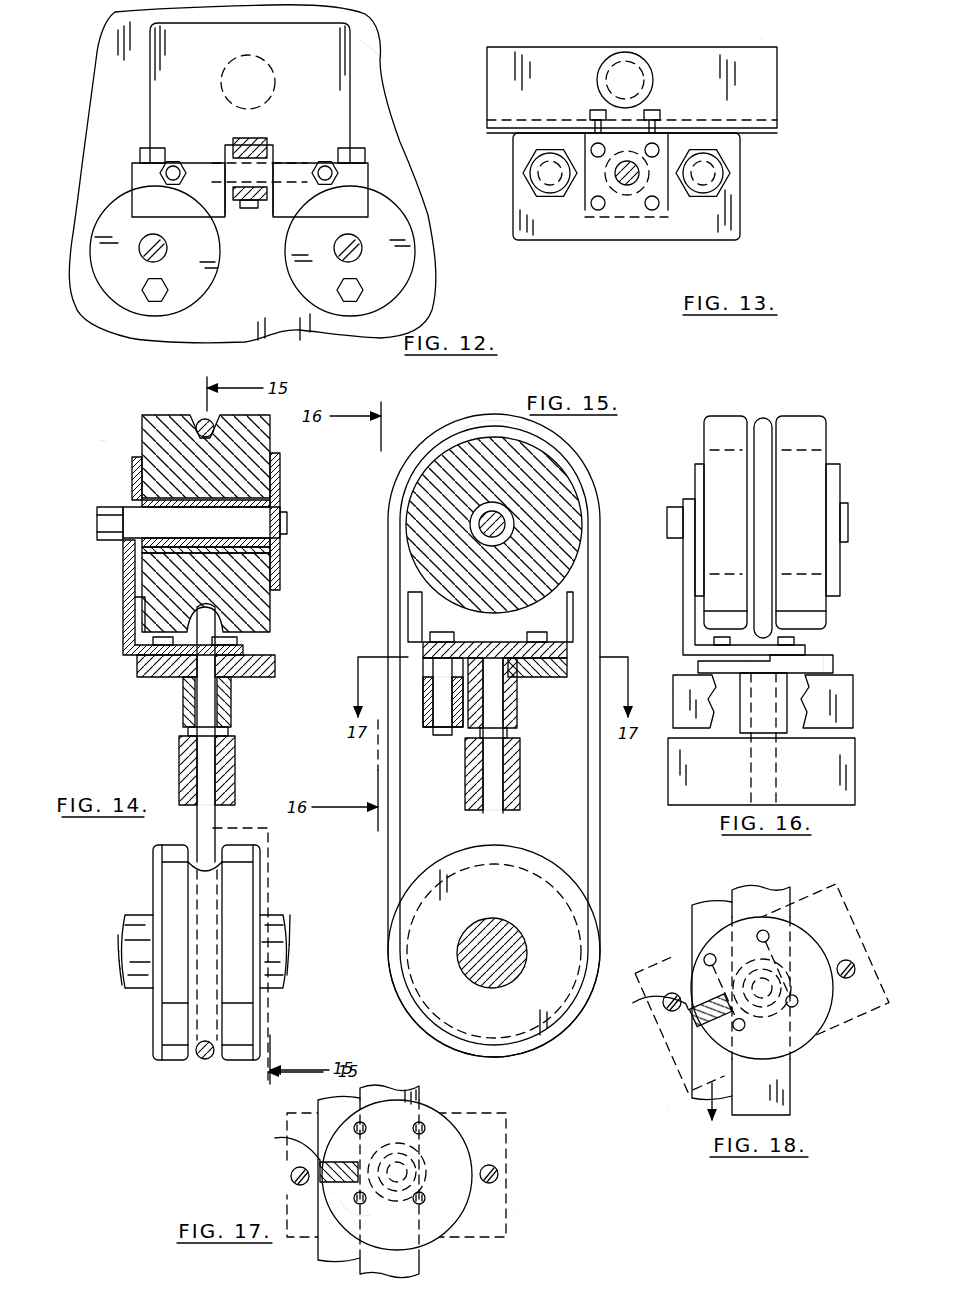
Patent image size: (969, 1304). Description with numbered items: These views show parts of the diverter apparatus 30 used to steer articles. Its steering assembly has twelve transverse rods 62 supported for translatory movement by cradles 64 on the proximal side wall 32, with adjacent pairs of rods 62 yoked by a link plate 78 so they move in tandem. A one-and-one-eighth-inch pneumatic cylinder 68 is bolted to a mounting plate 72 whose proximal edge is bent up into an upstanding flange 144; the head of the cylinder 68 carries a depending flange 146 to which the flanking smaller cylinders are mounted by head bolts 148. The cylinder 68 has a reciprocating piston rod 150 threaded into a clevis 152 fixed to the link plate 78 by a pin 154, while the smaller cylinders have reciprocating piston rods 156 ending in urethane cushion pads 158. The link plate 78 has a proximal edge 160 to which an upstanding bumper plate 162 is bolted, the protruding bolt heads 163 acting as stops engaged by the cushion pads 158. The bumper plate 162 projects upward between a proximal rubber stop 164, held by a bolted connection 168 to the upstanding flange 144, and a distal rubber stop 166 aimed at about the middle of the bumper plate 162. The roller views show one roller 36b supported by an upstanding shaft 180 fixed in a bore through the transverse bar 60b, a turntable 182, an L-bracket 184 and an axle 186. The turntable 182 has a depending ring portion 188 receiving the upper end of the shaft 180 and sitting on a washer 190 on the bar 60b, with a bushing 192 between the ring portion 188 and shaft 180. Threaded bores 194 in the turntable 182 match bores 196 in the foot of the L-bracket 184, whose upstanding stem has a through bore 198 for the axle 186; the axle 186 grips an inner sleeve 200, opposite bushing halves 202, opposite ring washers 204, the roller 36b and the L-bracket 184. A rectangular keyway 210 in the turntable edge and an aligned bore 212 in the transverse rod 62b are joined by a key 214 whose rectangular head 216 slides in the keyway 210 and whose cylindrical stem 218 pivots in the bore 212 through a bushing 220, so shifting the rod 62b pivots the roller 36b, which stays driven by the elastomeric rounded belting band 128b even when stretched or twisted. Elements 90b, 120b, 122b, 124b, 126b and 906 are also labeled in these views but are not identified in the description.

In FIG. 12, the diverter apparatus 30 is at (385, 50).
In FIG. 13, the diverter apparatus 30 is at (760, 38).
In FIG. 14, the diverter apparatus 30 is at (106, 442).
In FIG. 16, the diverter apparatus 30 is at (813, 392).
In FIG. 17, the diverter apparatus 30 is at (516, 1213).
In FIG. 18, the diverter apparatus 30 is at (668, 1108).
In FIG. 12, the proximal side wall 32 is at (108, 88).
In FIG. 14, the roller 36b is at (275, 452).
In FIG. 15, the roller 36b is at (585, 445).
In FIG. 16, the roller 36b is at (826, 412).
In FIG. 17, the roller 36b is at (510, 1125).
In FIG. 18, the roller 36b is at (762, 988).
In FIG. 14, the transverse bar 60b is at (180, 772).
In FIG. 15, the transverse bar 60b is at (520, 812).
In FIG. 16, the transverse bar 60b is at (830, 805).
In FIG. 17, the transverse bar 60b is at (395, 1086).
In FIG. 18, the transverse bar 60b is at (790, 1105).
In FIG. 12, the transverse rods 62 is at (138, 193).
In FIG. 15, the transverse rod 62b is at (428, 668).
In FIG. 16, the transverse rod 62b is at (845, 700).
In FIG. 17, the transverse rod 62b is at (320, 1100).
In FIG. 18, the transverse rod 62b is at (712, 902).
In FIG. 12, the cradles 64 is at (120, 285).
In FIG. 13, the one-and-one-eighth-inch pneumatic actuator 68 is at (652, 222).
In FIG. 13, the mounting plate 72 is at (768, 135).
In FIG. 12, the link plate 78 is at (275, 165).
In FIG. 15, the shaft 90b is at (470, 962).
In FIG. 14, the lower pulley 120b is at (160, 1032).
In FIG. 15, the lower pulley 120b is at (405, 985).
In FIG. 14, the pulley groove 122b is at (190, 1065).
In FIG. 14, the groove 124b is at (194, 414).
In FIG. 16, the groove 124b is at (752, 418).
In FIG. 14, the rim 126b is at (148, 416).
In FIG. 15, the rim 126b is at (480, 412).
In FIG. 16, the rim 126b is at (712, 416).
In FIG. 14, the elastomeric rounded belting band 128b is at (202, 418).
In FIG. 15, the elastomeric rounded belting band 128b is at (600, 820).
In FIG. 16, the elastomeric rounded belting band 128b is at (763, 418).
In FIG. 17, the elastomeric rounded belting band 128b is at (290, 1178).
In FIG. 18, the elastomeric rounded belting band 128b is at (851, 961).
In FIG. 13, the upstanding flange 144 is at (548, 50).
In FIG. 13, the depending flange 146 is at (570, 242).
In FIG. 13, the head bolts 148 is at (735, 168).
In FIG. 13, the reciprocating piston rod 150 is at (628, 188).
In FIG. 12, the clevis 152 is at (235, 200).
In FIG. 12, the pin 154 is at (248, 208).
In FIG. 13, the reciprocating piston rods 156 is at (725, 185).
In FIG. 13, the urethane cushion pads 158 is at (530, 172).
In FIG. 12, the proximal edge 160 is at (355, 172).
In FIG. 12, the upstanding bumper plate 162 is at (340, 95).
In FIG. 12, the bolt heads 163 is at (178, 190).
In FIG. 13, the proximal rubber stop 164 is at (630, 52).
In FIG. 12, the distal rubber stop 166 is at (222, 88).
In FIG. 13, the bolted connection 168 is at (640, 82).
In FIG. 14, the upstanding shaft 180 is at (236, 770).
In FIG. 15, the upstanding shaft 180 is at (492, 810).
In FIG. 17, the upstanding shaft 180 is at (428, 1172).
In FIG. 18, the upstanding shaft 180 is at (790, 1000).
In FIG. 14, the turntable 182 is at (160, 680).
In FIG. 15, the turntable 182 is at (545, 675).
In FIG. 16, the turntable 182 is at (835, 660).
In FIG. 17, the turntable 182 is at (440, 1238).
In FIG. 18, the turntable 182 is at (812, 1040).
In FIG. 14, the L-bracket 184 is at (123, 612).
In FIG. 15, the L-bracket 184 is at (422, 660).
In FIG. 16, the L-bracket 184 is at (685, 560).
In FIG. 14, the axle 186 is at (287, 522).
In FIG. 15, the axle 186 is at (505, 525).
In FIG. 16, the axle 186 is at (848, 522).
In FIG. 14, the depending ring portion 188 is at (232, 712).
In FIG. 15, the depending ring portion 188 is at (517, 730).
In FIG. 16, the depending ring portion 188 is at (780, 733).
In FIG. 14, the washer 190 is at (230, 732).
In FIG. 15, the washer 190 is at (462, 732).
In FIG. 16, the washer 190 is at (745, 737).
In FIG. 14, the bushing 192 is at (183, 700).
In FIG. 15, the bushing 192 is at (523, 707).
In FIG. 15, the threaded bores 194 is at (572, 662).
In FIG. 17, the threaded bores 194 is at (424, 1123).
In FIG. 18, the threaded bores 194 is at (770, 935).
In FIG. 15, the bores 196 is at (570, 648).
In FIG. 14, the through bore 198 is at (125, 548).
In FIG. 14, the inner sleeve 200 is at (272, 500).
In FIG. 15, the inner sleeve 200 is at (515, 528).
In FIG. 14, the bushing halves 202 is at (135, 478).
In FIG. 14, the ring washers 204 is at (280, 580).
In FIG. 16, the ring washers 204 is at (697, 466).
In FIG. 15, the rectangular keyway 210 is at (425, 640).
In FIG. 16, the rectangular keyway 210 is at (795, 658).
In FIG. 17, the rectangular keyway 210 is at (360, 1205).
In FIG. 18, the rectangular keyway 210 is at (730, 995).
In FIG. 15, the bore 212 is at (380, 772).
In FIG. 15, the key 214 is at (420, 727).
In FIG. 16, the key 214 is at (748, 663).
In FIG. 17, the key 214 is at (331, 1190).
In FIG. 18, the key 214 is at (697, 1019).
In FIG. 15, the rectangular head 216 is at (430, 650).
In FIG. 17, the rectangular head 216 is at (280, 1139).
In FIG. 18, the rectangular head 216 is at (690, 990).
In FIG. 15, the cylindrical stem 218 is at (437, 707).
In FIG. 17, the cylindrical stem 218 is at (320, 1180).
In FIG. 18, the cylindrical stem 218 is at (700, 1030).
In FIG. 15, the bushing 220 is at (438, 730).
In FIG. 14, the shaft 906 is at (118, 938).